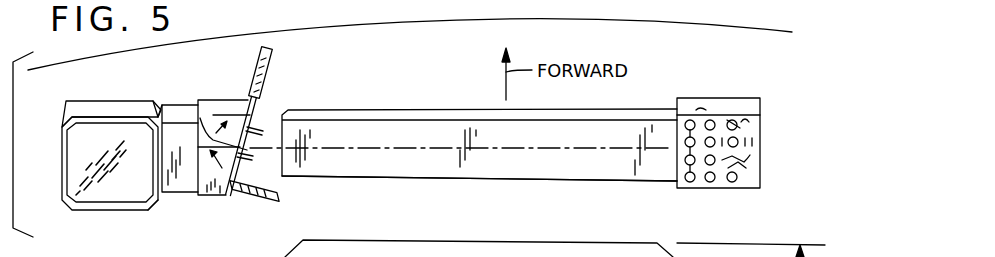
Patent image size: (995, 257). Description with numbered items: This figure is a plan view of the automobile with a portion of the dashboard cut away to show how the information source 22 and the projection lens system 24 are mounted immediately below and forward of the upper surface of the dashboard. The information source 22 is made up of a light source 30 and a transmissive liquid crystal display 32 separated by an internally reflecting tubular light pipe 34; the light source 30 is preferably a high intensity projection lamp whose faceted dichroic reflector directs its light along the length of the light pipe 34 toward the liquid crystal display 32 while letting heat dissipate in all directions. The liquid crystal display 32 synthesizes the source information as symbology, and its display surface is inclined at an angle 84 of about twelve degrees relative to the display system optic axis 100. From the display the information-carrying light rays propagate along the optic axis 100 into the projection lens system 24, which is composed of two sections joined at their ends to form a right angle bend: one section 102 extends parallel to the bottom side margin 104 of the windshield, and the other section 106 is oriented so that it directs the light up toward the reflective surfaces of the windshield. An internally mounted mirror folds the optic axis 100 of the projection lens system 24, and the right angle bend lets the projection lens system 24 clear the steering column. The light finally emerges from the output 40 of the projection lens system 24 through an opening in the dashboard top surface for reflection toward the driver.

The information source 22 is at (358, 102).
The projection lens system 24 is at (116, 104).
The light source 30 is at (738, 172).
The liquid crystal display 32 is at (226, 200).
The light pipe 34 is at (383, 179).
The output 40 is at (80, 168).
The angle 84 is at (218, 93).
The optic axis 100 is at (347, 147).
The section 102 is at (181, 193).
The bottom side margin 104 is at (413, 24).
The section 106 is at (146, 205).